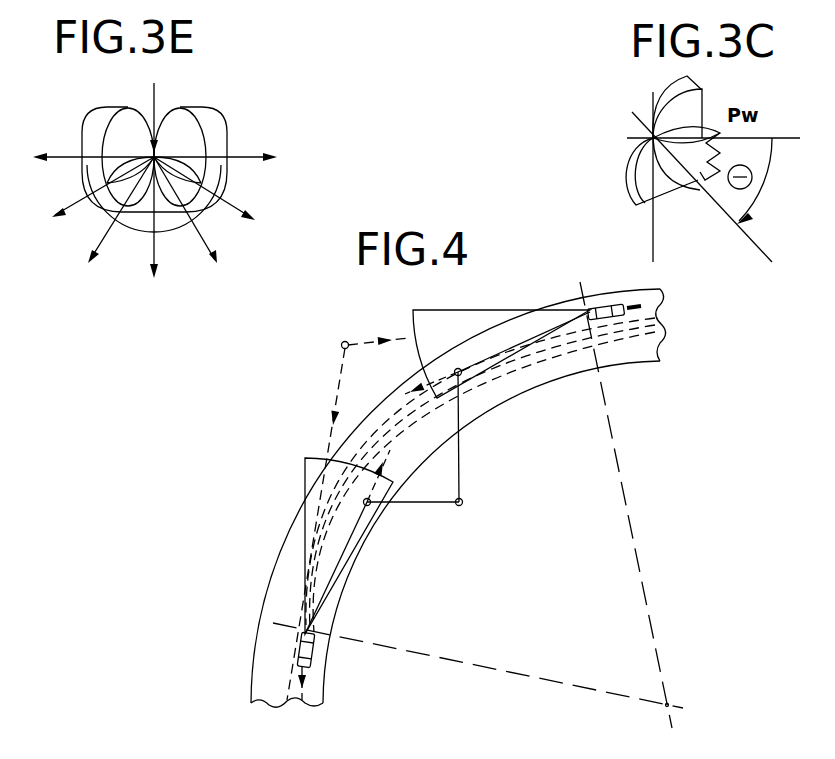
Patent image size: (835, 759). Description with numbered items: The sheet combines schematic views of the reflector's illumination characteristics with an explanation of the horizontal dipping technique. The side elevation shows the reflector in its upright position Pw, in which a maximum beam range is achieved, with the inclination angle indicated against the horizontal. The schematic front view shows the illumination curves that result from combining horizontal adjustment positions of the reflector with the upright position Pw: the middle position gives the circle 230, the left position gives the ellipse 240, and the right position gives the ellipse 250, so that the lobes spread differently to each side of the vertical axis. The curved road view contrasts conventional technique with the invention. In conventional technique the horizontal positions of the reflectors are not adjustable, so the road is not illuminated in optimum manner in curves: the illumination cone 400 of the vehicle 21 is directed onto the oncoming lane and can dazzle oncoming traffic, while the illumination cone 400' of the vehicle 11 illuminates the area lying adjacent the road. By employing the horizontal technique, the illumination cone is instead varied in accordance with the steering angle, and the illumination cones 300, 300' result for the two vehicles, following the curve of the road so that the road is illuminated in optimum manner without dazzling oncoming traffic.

In FIG. 4, the vehicle 11 is at (458, 498).
In FIG. 4, the vehicle 21 is at (325, 666).
In FIG. 4, the illumination cone 300 is at (384, 542).
In FIG. 4, the illumination cone 300' is at (497, 407).
In FIG. 4, the illumination cone 400 is at (318, 521).
In FIG. 4, the illumination cone 400' is at (378, 327).
In FIG. 3E, the circle 230 is at (140, 106).
In FIG. 3E, the ellipse 240 is at (82, 178).
In FIG. 3E, the ellipse 250 is at (155, 203).